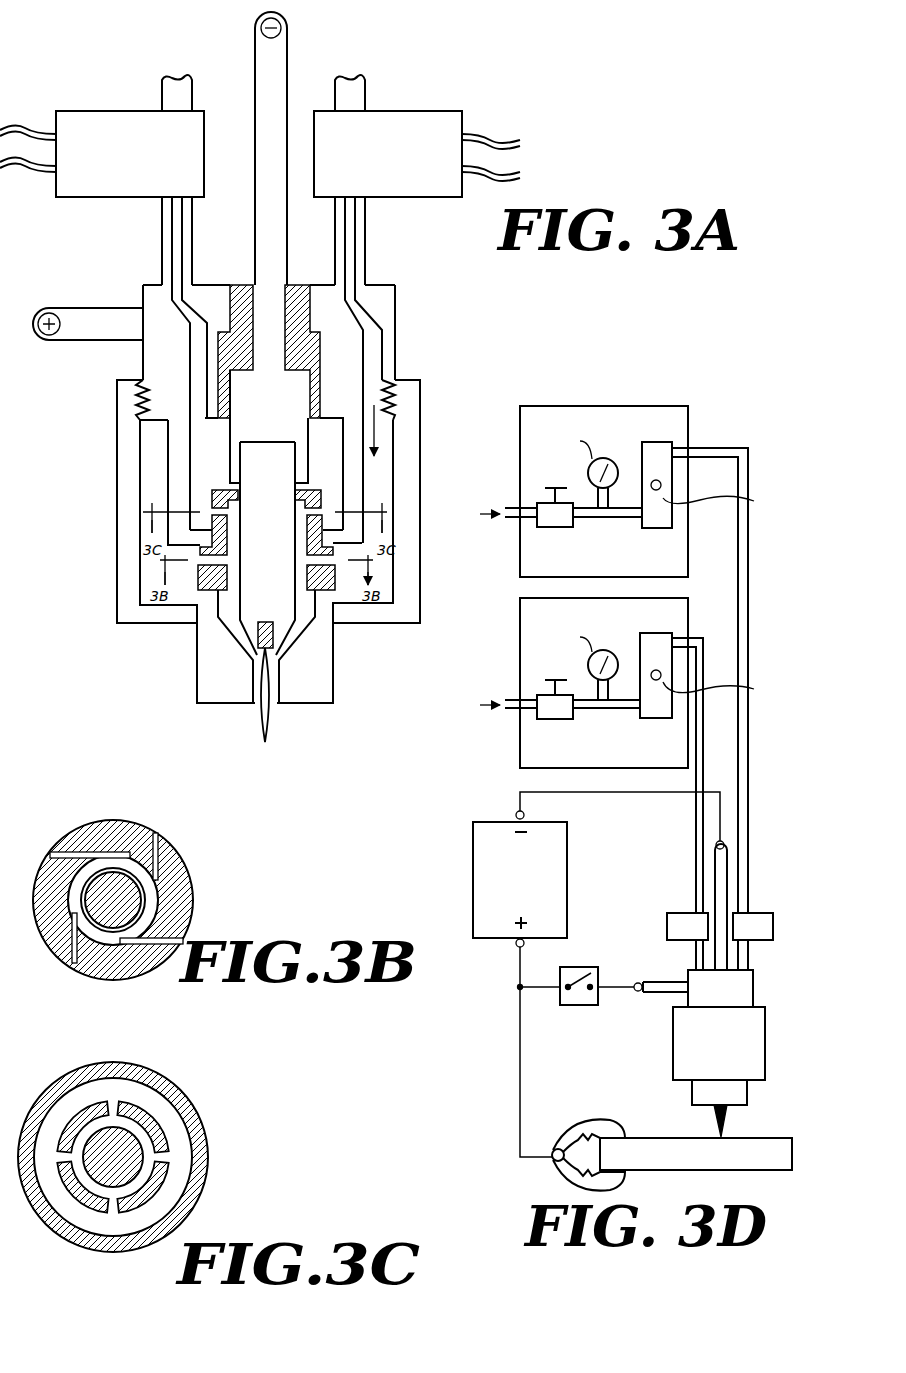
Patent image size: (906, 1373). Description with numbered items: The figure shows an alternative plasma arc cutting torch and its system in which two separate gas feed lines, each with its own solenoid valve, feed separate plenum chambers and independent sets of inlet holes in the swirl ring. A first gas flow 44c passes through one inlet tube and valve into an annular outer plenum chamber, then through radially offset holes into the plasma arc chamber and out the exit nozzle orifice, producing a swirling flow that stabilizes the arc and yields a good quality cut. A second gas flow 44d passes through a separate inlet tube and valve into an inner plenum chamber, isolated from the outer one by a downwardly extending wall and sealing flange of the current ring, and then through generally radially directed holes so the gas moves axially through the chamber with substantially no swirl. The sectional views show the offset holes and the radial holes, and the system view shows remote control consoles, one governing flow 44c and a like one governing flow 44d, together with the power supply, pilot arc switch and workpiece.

In FIG. 3A, the first gas flow 44c is at (349, 66).
In FIG. 3D, the first gas flow 44c is at (492, 512).
In FIG. 3A, the gas flow 44d is at (176, 66).
In FIG. 3D, the gas flow 44d is at (486, 710).